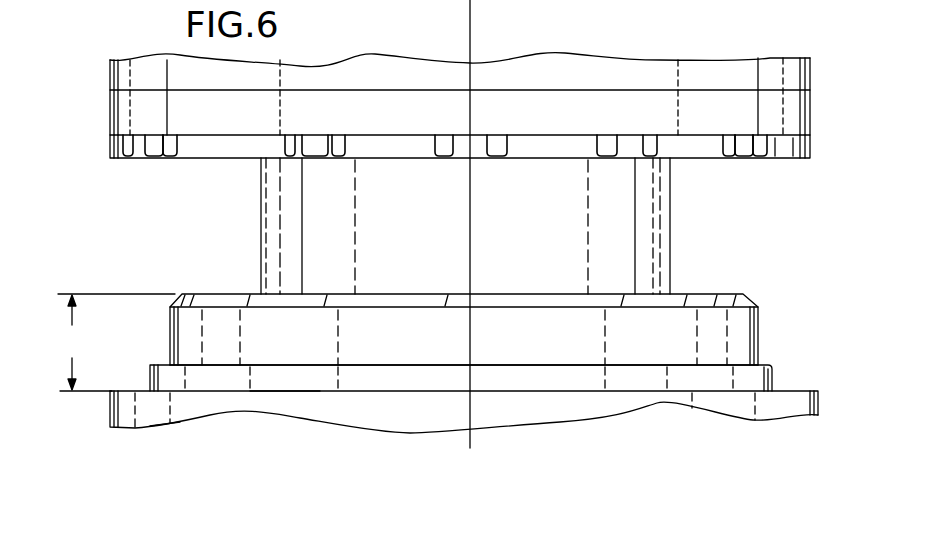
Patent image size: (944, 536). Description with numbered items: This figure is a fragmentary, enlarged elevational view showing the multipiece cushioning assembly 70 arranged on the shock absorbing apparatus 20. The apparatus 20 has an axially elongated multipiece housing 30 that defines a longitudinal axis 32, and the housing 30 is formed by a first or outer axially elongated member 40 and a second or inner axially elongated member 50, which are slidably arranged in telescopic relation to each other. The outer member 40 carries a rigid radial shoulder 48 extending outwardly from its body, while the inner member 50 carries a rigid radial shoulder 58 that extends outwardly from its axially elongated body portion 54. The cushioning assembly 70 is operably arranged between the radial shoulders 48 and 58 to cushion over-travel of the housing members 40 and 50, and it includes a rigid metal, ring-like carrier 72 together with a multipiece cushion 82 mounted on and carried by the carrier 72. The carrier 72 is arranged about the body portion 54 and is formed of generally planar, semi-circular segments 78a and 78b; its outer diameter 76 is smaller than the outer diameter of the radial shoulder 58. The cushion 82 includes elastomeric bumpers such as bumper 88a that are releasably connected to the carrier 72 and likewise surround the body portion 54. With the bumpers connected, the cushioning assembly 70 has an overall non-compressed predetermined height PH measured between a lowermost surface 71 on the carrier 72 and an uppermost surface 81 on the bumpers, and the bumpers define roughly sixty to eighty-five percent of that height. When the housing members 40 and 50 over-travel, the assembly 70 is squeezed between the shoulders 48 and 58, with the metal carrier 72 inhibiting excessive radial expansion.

The shock absorbing apparatus 20 is at (152, 36).
The multipiece housing 30 is at (626, 32).
The longitudinal axis 32 is at (472, 12).
The first or outer axially elongated member 40 is at (115, 78).
The radial shoulder 48 is at (125, 124).
The body portion 54 is at (277, 207).
The cushioning assembly 70 is at (758, 258).
The uppermost surface 81 is at (337, 293).
The multipiece cushion 82 is at (773, 298).
The elastomeric bumper 88a is at (517, 353).
The carrier 72 is at (794, 356).
The outer diameter 76 is at (778, 380).
The segment 78a is at (378, 380).
The segment 78b is at (567, 383).
The second or inner axially elongated member 50 is at (652, 447).
The radial shoulder 58 is at (177, 413).
The lowermost surface 71 is at (278, 393).